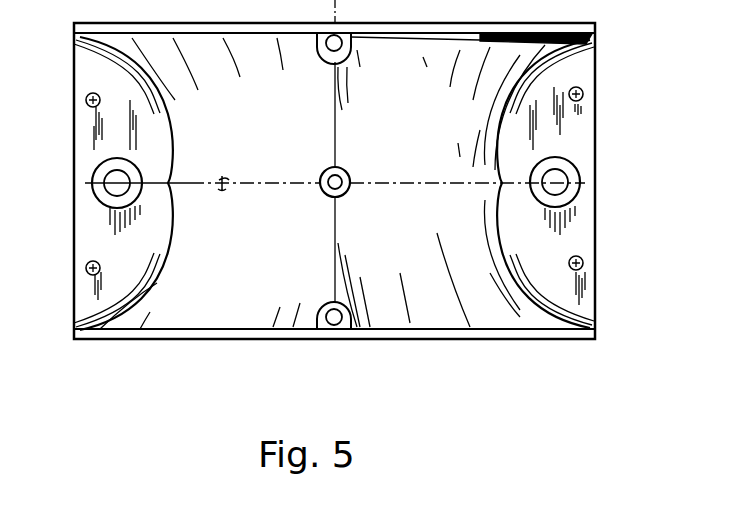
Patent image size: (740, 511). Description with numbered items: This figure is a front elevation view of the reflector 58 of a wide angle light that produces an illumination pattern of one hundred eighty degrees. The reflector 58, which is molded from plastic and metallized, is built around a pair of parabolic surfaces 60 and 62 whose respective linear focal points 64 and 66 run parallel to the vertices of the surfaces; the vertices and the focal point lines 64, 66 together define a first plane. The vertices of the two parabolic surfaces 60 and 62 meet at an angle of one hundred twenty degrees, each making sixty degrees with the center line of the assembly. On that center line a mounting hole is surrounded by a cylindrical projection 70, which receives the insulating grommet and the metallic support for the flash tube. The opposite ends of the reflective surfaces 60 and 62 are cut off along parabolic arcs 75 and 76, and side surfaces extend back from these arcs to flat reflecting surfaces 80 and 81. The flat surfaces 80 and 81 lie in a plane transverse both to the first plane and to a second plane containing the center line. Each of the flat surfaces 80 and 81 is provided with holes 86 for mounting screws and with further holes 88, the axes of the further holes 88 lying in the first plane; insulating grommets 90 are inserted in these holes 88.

The reflector 58 is at (210, 348).
The parabolic surface 60 is at (246, 143).
The parabolic surface 62 is at (414, 139).
The linear focal point 64 is at (300, 184).
The linear focal point 66 is at (435, 184).
The cylindrical projection 70 is at (345, 170).
The parabolic arc 75 is at (117, 80).
The parabolic arc 76 is at (557, 77).
The flat reflecting surface 80 is at (93, 150).
The flat reflecting surface 81 is at (563, 131).
The holes 86 is at (584, 94).
The further holes 88 is at (93, 201).
The insulating grommets 90 is at (97, 193).